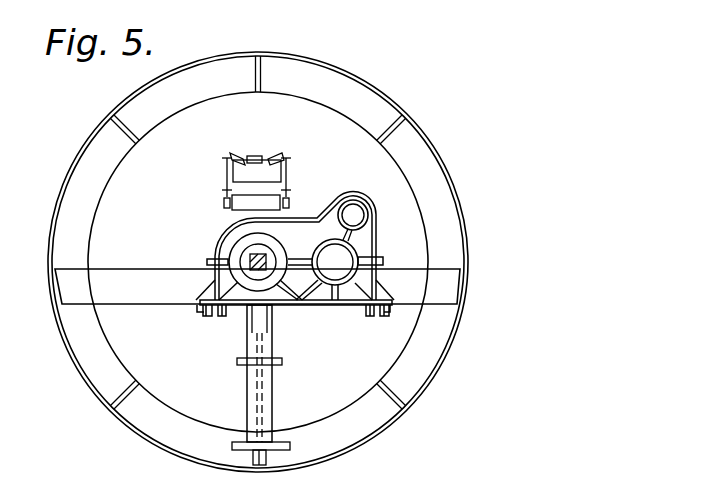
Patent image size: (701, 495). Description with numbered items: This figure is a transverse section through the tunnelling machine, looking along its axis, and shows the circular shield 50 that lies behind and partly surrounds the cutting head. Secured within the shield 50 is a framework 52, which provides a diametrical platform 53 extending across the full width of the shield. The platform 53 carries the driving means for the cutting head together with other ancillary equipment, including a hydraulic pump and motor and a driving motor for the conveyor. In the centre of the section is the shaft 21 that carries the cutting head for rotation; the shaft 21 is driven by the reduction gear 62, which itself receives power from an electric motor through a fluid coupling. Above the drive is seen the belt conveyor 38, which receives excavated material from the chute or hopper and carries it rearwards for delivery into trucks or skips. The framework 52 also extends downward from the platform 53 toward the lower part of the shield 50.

The shield 50 is at (424, 137).
The diametrical platform 53 is at (125, 270).
The shaft 21 is at (252, 258).
The reduction gear 62 is at (376, 246).
The belt conveyor 38 is at (263, 151).
The framework 52 is at (246, 374).